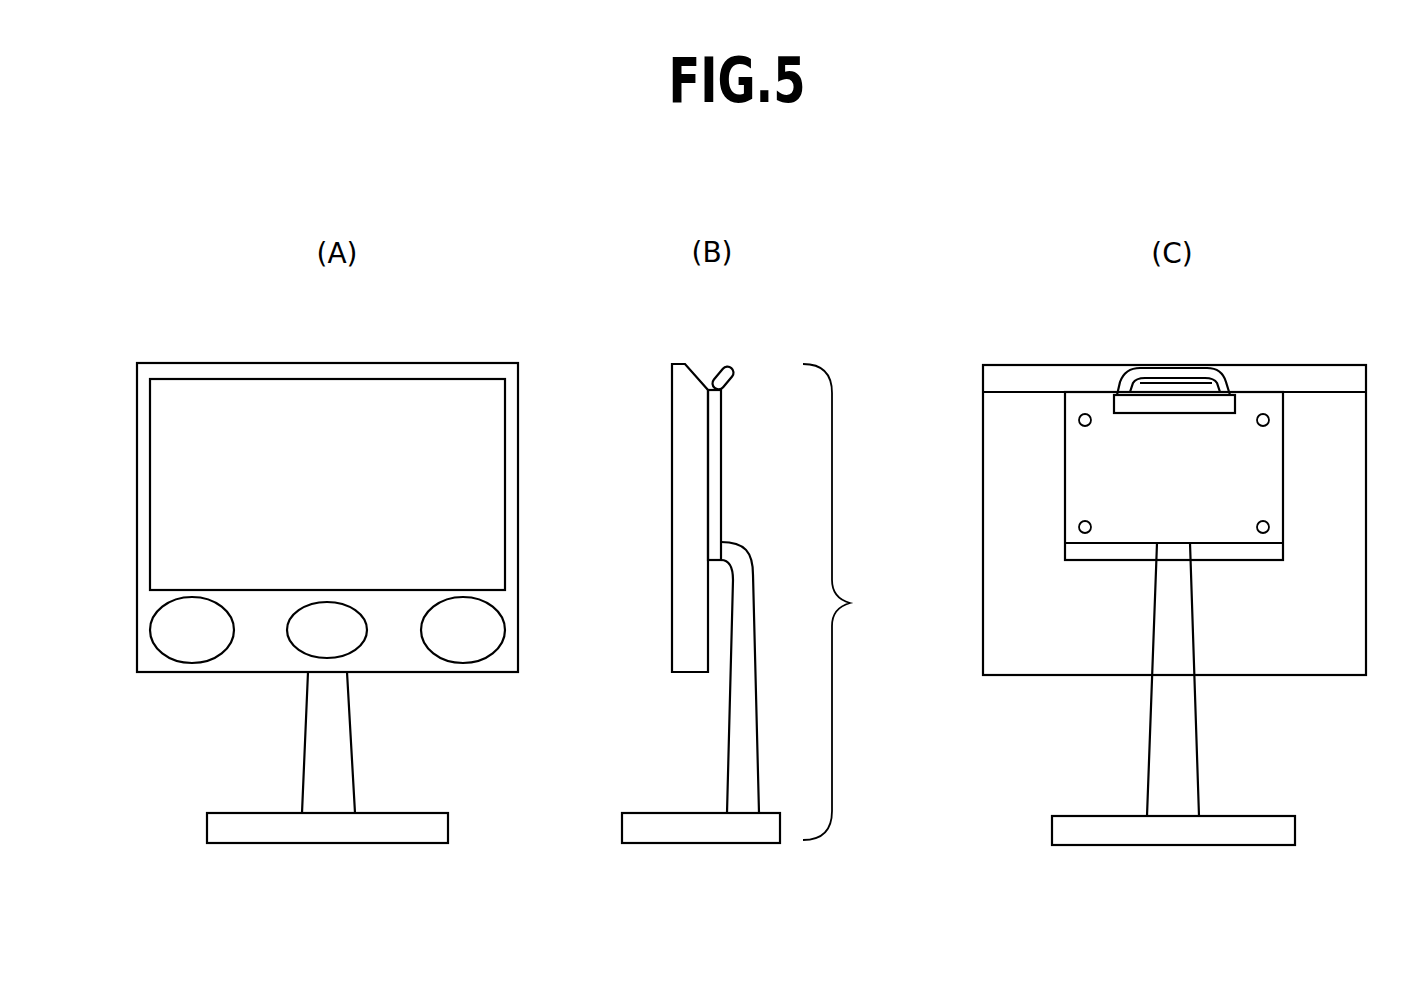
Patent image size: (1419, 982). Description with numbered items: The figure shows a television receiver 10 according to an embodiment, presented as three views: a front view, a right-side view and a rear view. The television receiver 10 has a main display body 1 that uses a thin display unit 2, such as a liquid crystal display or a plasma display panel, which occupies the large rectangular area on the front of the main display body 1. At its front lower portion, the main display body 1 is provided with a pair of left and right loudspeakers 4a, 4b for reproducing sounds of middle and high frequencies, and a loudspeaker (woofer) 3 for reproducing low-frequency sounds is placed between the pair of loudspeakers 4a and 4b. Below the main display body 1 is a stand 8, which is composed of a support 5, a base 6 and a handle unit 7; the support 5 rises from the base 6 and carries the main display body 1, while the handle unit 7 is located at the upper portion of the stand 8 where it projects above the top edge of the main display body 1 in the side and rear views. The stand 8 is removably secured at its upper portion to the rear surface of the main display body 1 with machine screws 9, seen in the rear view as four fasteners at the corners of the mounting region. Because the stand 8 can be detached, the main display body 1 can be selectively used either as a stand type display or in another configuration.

The main display body 1 is at (519, 495).
The thin display unit 2 is at (167, 468).
The loudspeaker (woofer) 3 is at (307, 648).
The loudspeaker 4a is at (168, 635).
The loudspeaker 4b is at (484, 629).
The support 5 is at (347, 738).
The base 6 is at (418, 824).
The handle unit 7 is at (738, 378).
The stand 8 is at (838, 602).
The machine screws 9 is at (1269, 420).
The television receiver 10 is at (472, 333).